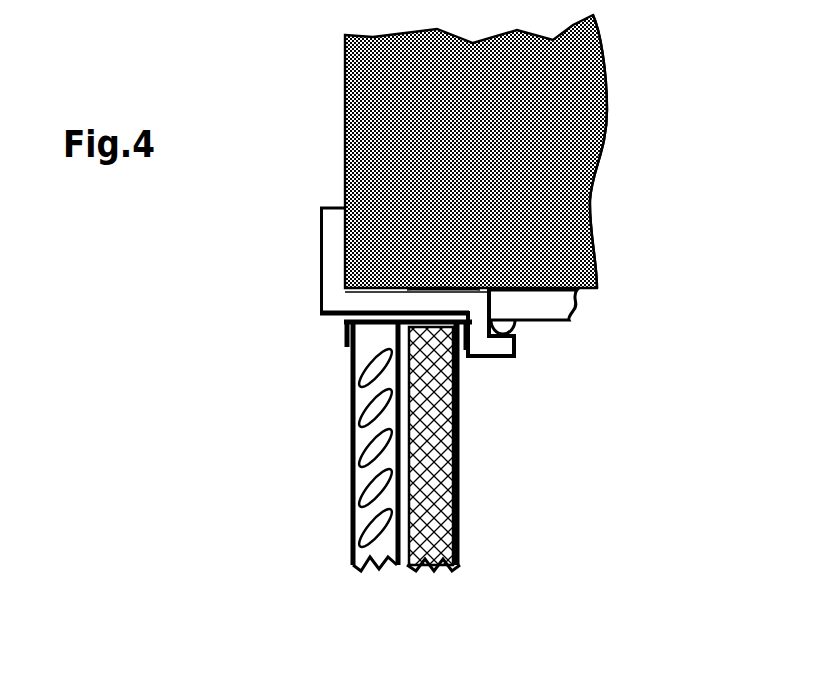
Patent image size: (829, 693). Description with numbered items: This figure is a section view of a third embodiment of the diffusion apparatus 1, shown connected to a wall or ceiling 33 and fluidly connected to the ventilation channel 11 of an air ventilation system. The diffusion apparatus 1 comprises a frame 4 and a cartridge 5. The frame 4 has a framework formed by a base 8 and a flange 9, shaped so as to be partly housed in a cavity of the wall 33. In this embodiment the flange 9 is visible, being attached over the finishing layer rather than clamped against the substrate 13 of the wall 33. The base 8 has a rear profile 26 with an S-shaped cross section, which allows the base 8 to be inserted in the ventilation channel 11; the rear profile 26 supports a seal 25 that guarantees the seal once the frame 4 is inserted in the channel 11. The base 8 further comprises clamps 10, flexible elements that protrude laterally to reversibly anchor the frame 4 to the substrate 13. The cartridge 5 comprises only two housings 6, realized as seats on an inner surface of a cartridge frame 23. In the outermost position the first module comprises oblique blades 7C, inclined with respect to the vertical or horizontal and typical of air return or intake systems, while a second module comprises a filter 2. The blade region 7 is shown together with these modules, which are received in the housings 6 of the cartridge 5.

The diffusion apparatus 1 is at (257, 301).
The filter 2 is at (458, 540).
The frame 4 is at (304, 242).
The cartridge 5 is at (309, 505).
The housings 6 is at (458, 420).
The sealing profile end regions 7 is at (410, 570).
The oblique blades 7C is at (353, 445).
The base 8 is at (346, 311).
The flange 9 is at (335, 238).
The clamps 10 is at (587, 222).
The ventilation channel 11 is at (530, 307).
The substrate 13 is at (513, 123).
The cartridge frame 23 is at (359, 314).
The seal 25 is at (508, 327).
The rear profile 26 is at (488, 347).
The wall or ceiling 33 is at (321, 85).